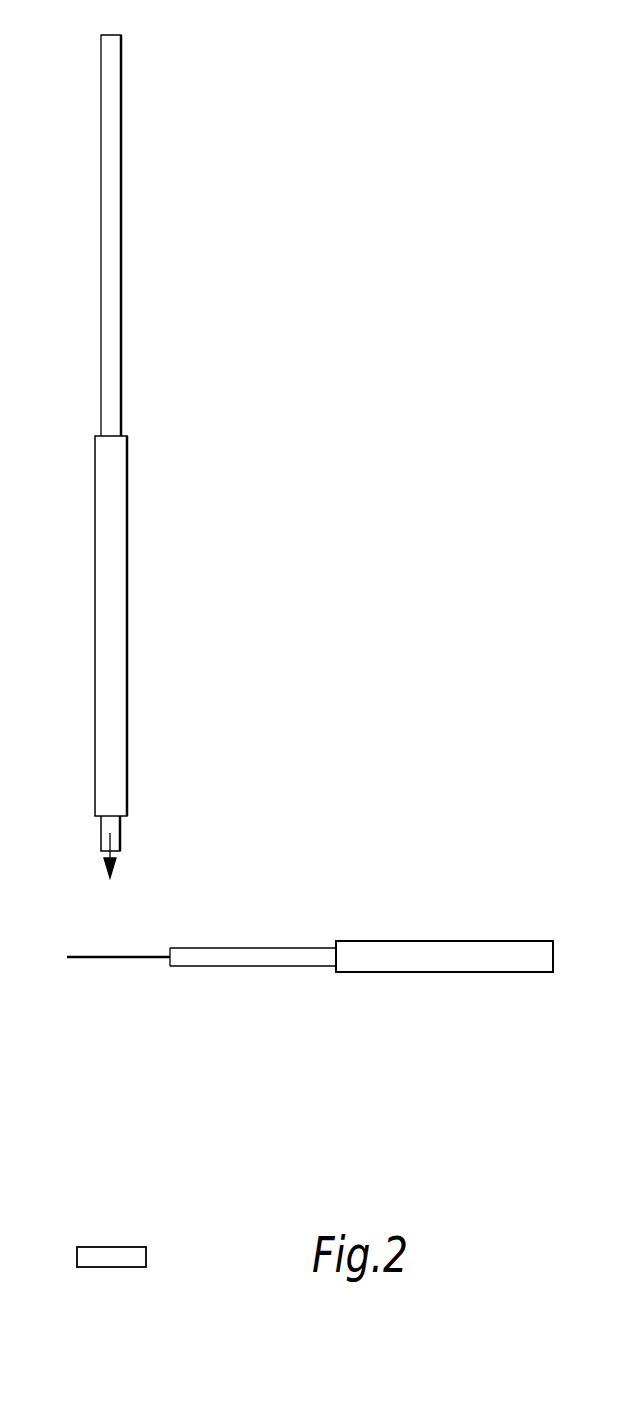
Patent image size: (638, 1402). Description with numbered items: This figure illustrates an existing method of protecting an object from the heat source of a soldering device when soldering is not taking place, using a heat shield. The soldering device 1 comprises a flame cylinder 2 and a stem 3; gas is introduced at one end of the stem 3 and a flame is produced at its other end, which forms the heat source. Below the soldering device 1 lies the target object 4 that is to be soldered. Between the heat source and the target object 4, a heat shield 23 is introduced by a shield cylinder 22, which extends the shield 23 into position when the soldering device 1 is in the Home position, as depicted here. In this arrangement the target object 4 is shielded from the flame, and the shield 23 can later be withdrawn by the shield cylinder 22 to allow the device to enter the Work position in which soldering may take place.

The soldering device 1 is at (86, 578).
The flame cylinder 2 is at (108, 662).
The stem 3 is at (113, 222).
The target object 4 is at (128, 1251).
The shield cylinder 22 is at (438, 948).
The heat shield 23 is at (108, 957).